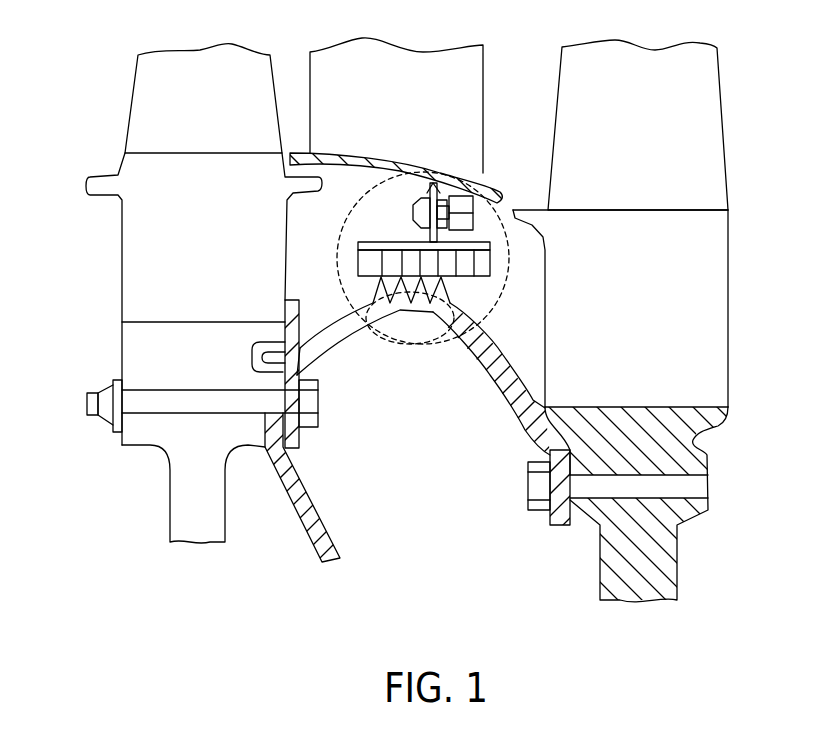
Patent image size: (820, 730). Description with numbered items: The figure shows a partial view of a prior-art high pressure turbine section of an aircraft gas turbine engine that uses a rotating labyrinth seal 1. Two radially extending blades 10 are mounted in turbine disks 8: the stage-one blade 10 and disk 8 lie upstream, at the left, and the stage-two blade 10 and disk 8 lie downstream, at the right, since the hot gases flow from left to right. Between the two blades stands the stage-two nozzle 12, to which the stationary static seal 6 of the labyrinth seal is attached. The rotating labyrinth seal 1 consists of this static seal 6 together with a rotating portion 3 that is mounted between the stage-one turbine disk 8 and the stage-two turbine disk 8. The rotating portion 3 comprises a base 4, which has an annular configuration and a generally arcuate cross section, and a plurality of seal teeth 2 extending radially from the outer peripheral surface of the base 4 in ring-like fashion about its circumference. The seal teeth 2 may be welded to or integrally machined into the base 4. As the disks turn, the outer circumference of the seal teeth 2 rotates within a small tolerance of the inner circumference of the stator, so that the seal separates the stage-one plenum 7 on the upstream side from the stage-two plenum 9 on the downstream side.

The rotating labyrinth seal 1 is at (383, 335).
The seal teeth 2 is at (445, 290).
The rotating portion 3 is at (437, 305).
The base 4 is at (412, 315).
The static seal 6 is at (383, 247).
The stage-one plenum 7 is at (314, 229).
The turbine disk 8 is at (177, 512).
The stage-two plenum 9 is at (507, 379).
The blade 10 is at (150, 113).
The stage-two nozzle 12 is at (438, 72).